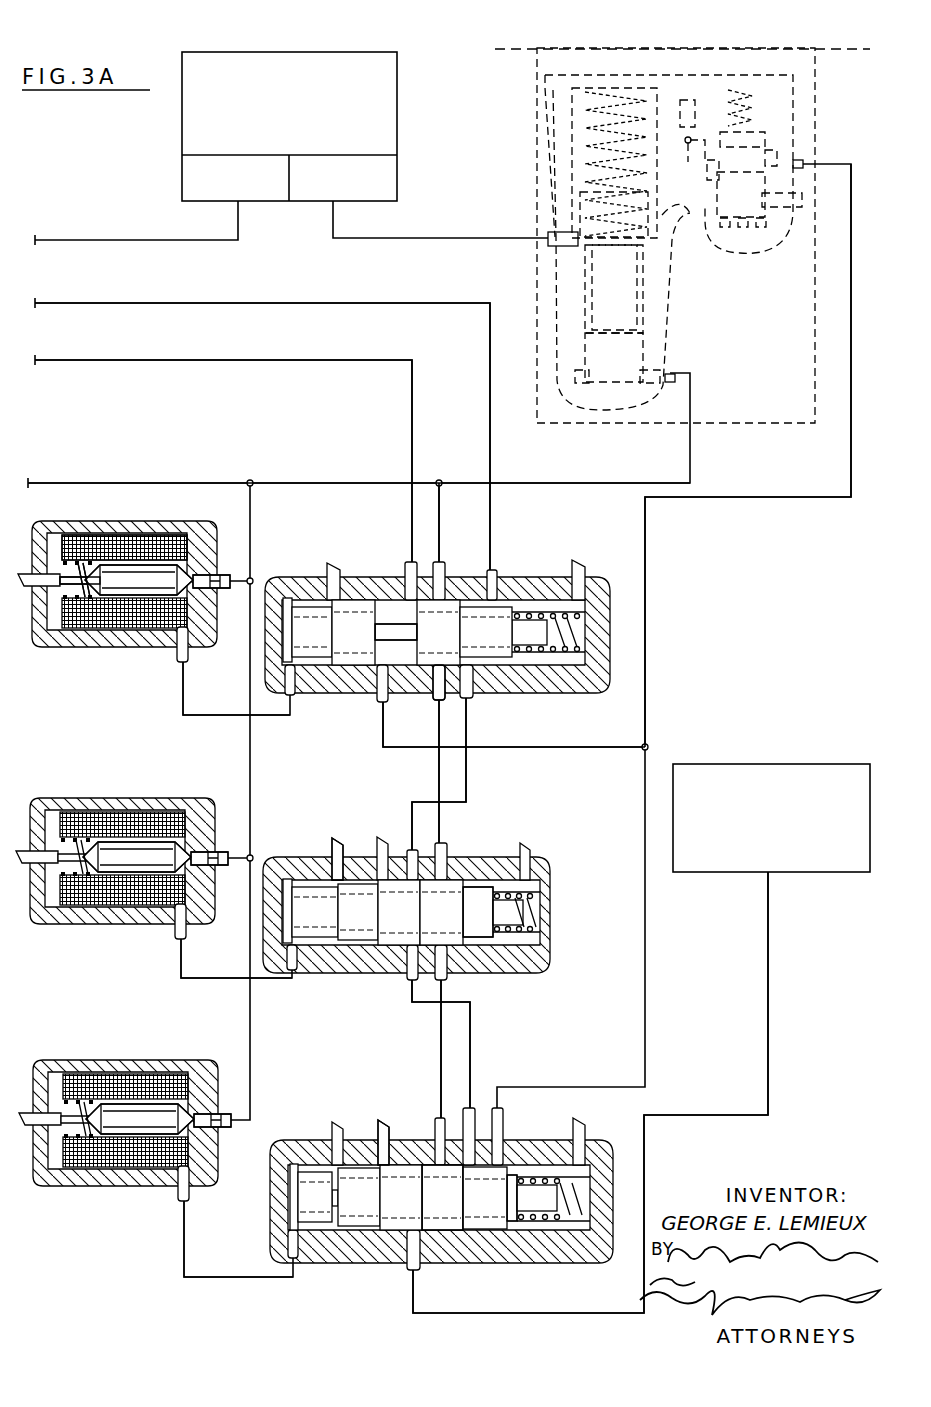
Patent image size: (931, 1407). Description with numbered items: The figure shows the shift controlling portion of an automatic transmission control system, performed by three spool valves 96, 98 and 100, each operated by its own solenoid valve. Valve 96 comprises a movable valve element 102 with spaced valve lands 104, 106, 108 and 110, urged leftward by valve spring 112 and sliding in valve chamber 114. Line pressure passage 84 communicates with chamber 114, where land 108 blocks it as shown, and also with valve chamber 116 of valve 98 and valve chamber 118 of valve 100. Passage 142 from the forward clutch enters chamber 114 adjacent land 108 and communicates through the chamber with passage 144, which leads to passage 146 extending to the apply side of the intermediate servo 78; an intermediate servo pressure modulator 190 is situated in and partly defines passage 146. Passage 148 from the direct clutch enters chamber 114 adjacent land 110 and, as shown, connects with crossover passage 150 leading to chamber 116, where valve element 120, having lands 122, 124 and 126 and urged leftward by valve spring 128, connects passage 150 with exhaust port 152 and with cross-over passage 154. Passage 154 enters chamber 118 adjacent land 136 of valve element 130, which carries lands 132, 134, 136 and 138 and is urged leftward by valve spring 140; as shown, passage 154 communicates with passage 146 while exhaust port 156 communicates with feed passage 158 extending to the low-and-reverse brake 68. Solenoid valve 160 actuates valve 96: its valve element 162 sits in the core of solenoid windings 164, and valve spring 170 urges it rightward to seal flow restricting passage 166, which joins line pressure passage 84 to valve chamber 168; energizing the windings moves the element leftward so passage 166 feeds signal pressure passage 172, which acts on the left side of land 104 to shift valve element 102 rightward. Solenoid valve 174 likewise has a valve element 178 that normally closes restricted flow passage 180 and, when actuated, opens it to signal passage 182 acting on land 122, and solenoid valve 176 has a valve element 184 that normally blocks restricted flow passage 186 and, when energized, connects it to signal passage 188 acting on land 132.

The intermediate servo 78 is at (255, 52).
The intermediate servo pressure modulator 190 is at (532, 213).
The passage 148 is at (100, 303).
The passage 142 is at (95, 360).
The line pressure passage 84 is at (80, 483).
The solenoid valve 160 is at (32, 622).
The valve spring 170 is at (79, 563).
The valve element 162 is at (118, 570).
The solenoid windings 164 is at (176, 548).
The valve chamber 168 is at (124, 598).
The flow restricting passage 166 is at (222, 590).
The signal pressure passage 172 is at (226, 717).
The spool valve 96 is at (558, 572).
The valve land 104 is at (312, 605).
The valve land 106 is at (354, 612).
The valve land 108 is at (462, 612).
The valve land 110 is at (520, 610).
The valve spring 112 is at (566, 630).
The valve element 102 is at (392, 652).
The valve chamber 114 is at (428, 668).
The passage 146 is at (645, 575).
The crossover passage 150 is at (467, 735).
The passage 144 is at (550, 747).
The low-and-reverse brake 68 is at (757, 764).
The solenoid valve 174 is at (143, 791).
The valve element 178 is at (128, 868).
The restricted flow passage 180 is at (222, 866).
The signal passage 182 is at (232, 980).
The spool valve 98 is at (546, 850).
The exhaust port 152 is at (340, 838).
The valve land 122 is at (320, 948).
The valve land 124 is at (372, 950).
The valve element 120 is at (403, 947).
The valve land 126 is at (450, 892).
The valve spring 128 is at (520, 915).
The valve chamber 116 is at (455, 942).
The cross-over passage 154 is at (470, 1068).
The solenoid valve 176 is at (120, 1055).
The valve element 184 is at (135, 1138).
The restricted flow passage 186 is at (230, 1128).
The signal passage 188 is at (263, 1282).
The spool valve 100 is at (302, 1140).
The valve land 132 is at (318, 1245).
The valve land 134 is at (353, 1185).
The valve element 130 is at (400, 1215).
The valve land 136 is at (485, 1215).
The valve spring 140 is at (562, 1232).
The exhaust port 156 is at (385, 1130).
The valve chamber 118 is at (430, 1172).
The valve land 138 is at (508, 1180).
The feed passage 158 is at (548, 1314).